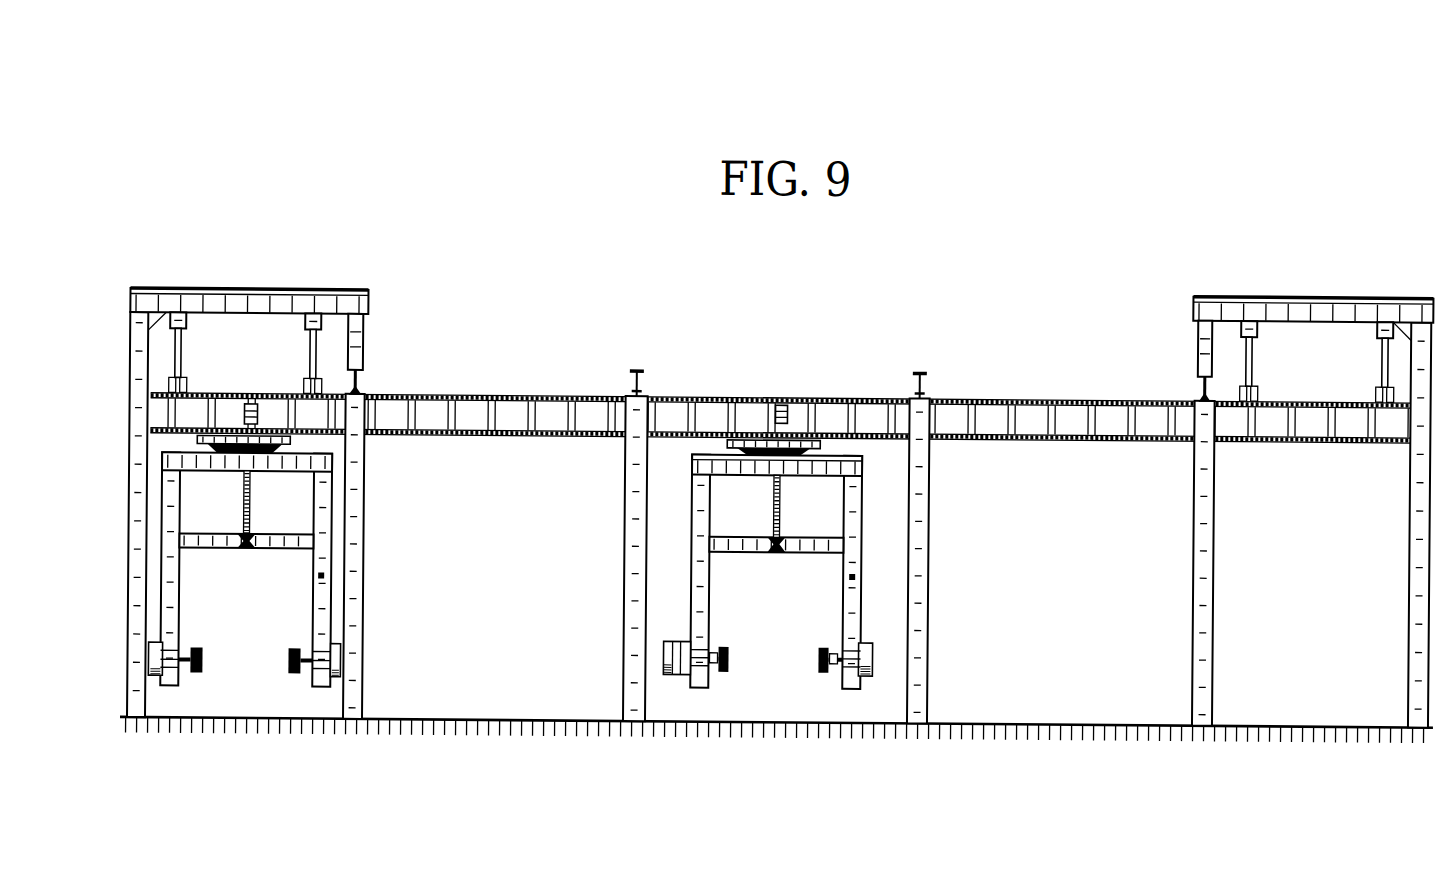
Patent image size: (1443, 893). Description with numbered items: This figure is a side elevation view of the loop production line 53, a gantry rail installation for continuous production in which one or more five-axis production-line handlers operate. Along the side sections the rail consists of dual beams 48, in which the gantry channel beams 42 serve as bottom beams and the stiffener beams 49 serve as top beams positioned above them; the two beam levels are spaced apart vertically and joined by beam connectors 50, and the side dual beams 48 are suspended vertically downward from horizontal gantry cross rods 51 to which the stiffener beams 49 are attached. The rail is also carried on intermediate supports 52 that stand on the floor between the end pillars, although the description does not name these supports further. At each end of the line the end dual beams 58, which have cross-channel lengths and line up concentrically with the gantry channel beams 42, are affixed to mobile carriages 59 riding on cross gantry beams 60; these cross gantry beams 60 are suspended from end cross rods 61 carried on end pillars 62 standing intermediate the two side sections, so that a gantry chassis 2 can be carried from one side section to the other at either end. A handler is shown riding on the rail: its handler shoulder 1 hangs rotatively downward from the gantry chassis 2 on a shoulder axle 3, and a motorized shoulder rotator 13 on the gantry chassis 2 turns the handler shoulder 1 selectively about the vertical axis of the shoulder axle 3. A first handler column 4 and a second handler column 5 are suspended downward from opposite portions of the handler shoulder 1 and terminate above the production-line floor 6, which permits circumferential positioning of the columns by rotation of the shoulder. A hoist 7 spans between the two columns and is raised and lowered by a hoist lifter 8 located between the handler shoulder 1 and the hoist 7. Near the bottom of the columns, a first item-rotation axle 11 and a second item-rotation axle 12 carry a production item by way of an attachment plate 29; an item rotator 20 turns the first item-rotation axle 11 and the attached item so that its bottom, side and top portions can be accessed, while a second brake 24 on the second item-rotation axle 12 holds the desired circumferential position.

The handler shoulder 1 is at (722, 457).
The gantry chassis 2 is at (748, 435).
The shoulder axle 3 is at (806, 447).
The first handler column 4 is at (700, 532).
The second handler column 5 is at (850, 532).
The production-line floor 6 is at (484, 735).
The hoist 7 is at (738, 545).
The hoist lifter 8 is at (779, 541).
The first item-rotation axle 11 is at (710, 667).
The second item-rotation axle 12 is at (838, 667).
The motorized shoulder rotator 13 is at (784, 399).
The item rotator 20 is at (668, 654).
The second brake 24 is at (872, 654).
The attachment plate 29 is at (817, 655).
The gantry channel beams 42 is at (555, 433).
The dual beams 48 is at (781, 401).
The stiffener beams 49 is at (553, 392).
The beam connectors 50 is at (527, 413).
The gantry cross rods 51 is at (634, 366).
The support column 52 is at (634, 695).
The loop production line 53 is at (278, 129).
The end dual beams 58 is at (262, 375).
The mobile carriages 59 is at (182, 378).
The cross gantry beams 60 is at (782, 357).
The end cross rods 61 is at (246, 288).
The end pillars 62 is at (137, 700).